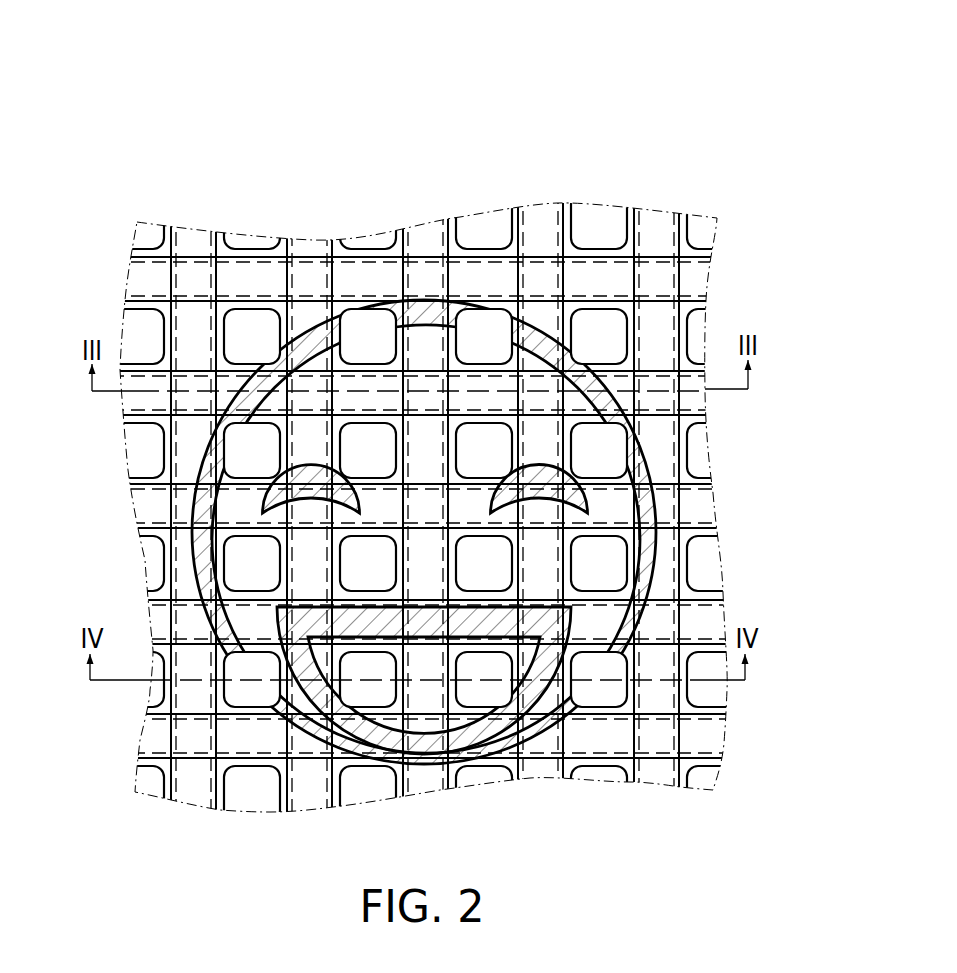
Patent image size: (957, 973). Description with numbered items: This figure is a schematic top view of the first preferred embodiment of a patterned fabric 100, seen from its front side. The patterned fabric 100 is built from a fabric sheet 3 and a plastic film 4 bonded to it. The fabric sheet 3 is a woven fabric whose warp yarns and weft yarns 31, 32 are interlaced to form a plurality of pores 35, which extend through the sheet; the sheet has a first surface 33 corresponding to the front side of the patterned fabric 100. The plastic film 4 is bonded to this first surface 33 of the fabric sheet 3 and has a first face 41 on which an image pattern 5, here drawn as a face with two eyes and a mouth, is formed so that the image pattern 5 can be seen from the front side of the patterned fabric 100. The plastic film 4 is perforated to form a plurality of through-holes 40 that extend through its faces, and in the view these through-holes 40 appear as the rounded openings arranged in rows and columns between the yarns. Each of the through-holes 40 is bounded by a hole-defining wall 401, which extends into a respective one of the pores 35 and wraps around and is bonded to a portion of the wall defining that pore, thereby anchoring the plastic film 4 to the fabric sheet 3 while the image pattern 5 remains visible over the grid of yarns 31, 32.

The patterned fabric 100 is at (640, 56).
The fabric sheet 3 is at (440, 262).
The warp yarns 31 is at (155, 265).
The weft yarns 32 is at (192, 233).
The first surface 33 is at (308, 272).
The pores 35 is at (240, 297).
The plastic film 4 is at (400, 462).
The through-holes 40 is at (425, 458).
The hole-defining wall 401 is at (462, 212).
The first face 41 is at (370, 278).
The image pattern 5 is at (206, 455).